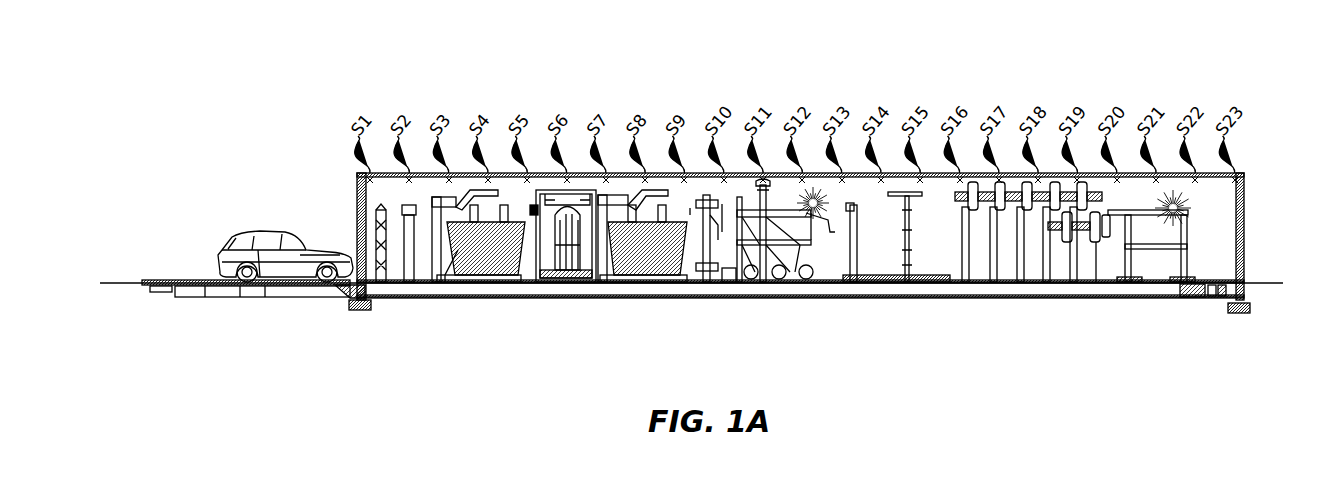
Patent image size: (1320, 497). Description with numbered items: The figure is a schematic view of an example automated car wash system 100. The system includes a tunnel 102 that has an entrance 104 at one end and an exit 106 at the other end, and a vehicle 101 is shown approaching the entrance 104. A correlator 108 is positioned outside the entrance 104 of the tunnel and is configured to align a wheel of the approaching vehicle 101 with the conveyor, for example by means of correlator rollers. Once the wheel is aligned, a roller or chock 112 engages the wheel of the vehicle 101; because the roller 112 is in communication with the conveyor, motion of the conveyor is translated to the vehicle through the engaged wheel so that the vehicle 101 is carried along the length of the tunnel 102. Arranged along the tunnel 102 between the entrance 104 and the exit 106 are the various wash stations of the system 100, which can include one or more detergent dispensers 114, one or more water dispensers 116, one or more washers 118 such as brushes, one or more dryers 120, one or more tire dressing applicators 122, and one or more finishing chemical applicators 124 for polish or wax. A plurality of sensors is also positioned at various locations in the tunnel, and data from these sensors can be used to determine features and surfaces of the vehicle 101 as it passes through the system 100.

The automated car wash system 100 is at (1203, 70).
The vehicle 101 is at (274, 232).
The tunnel 102 is at (361, 190).
The entrance 104 is at (345, 202).
The exit 106 is at (1247, 194).
The correlator 108 is at (153, 292).
The roller or chock 112 is at (302, 283).
The detergent dispenser 114 is at (412, 216).
The water dispenser 116 is at (562, 216).
The washer 118 is at (453, 243).
The dryer 120 is at (990, 206).
The tire dressing applicator 122 is at (692, 264).
The finishing chemical applicator 124 is at (838, 226).